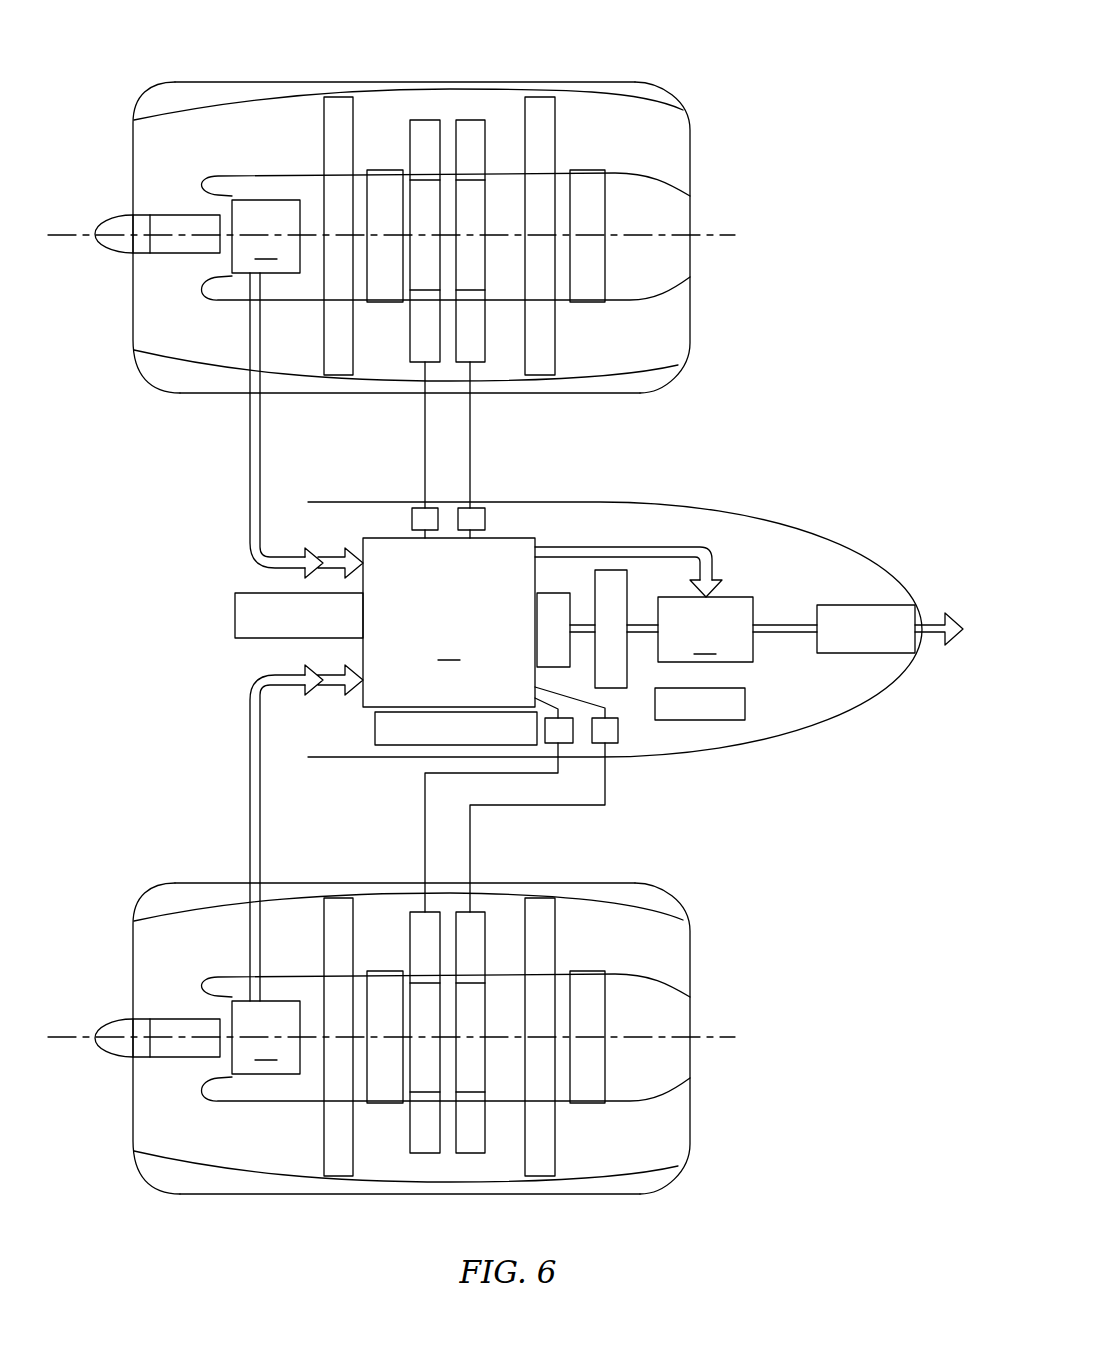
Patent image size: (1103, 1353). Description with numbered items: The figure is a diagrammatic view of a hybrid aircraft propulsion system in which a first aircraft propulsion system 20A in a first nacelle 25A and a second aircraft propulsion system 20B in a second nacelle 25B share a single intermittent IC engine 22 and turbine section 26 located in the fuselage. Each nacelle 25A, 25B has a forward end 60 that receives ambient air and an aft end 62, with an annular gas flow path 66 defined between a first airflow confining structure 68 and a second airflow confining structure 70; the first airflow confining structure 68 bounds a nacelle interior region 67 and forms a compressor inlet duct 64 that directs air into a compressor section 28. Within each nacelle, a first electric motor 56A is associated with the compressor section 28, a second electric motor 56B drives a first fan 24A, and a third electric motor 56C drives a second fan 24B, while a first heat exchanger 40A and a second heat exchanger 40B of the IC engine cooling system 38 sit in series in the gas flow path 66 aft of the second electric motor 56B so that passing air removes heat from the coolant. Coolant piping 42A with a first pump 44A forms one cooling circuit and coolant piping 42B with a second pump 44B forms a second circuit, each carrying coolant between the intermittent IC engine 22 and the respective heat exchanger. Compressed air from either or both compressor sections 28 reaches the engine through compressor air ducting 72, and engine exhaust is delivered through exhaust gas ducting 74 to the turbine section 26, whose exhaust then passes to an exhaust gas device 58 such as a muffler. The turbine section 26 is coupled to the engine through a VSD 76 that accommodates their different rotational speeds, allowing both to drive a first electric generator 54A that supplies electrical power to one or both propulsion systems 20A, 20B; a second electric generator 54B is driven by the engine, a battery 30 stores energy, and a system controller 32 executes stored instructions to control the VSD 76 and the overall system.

The first aircraft propulsion system 20A is at (727, 63).
The second aircraft propulsion system 20B is at (727, 864).
The intermittent IC engine 22 is at (449, 622).
The first fan 24A is at (340, 97).
The second fan 24B is at (543, 97).
The first nacelle 25A is at (678, 365).
The second nacelle 25B is at (678, 1166).
The turbine section 26 is at (705, 629).
The compressor section 28 is at (266, 637).
The battery 30 is at (746, 705).
The system controller 32 is at (374, 722).
The IC engine cooling system 38 is at (368, 437).
The first heat exchanger 40A is at (425, 120).
The second heat exchanger 40B is at (470, 120).
The coolant piping 42A is at (423, 425).
The coolant piping 42B is at (472, 425).
The first pump 44A is at (412, 507).
The second pump 44B is at (485, 507).
The first electric generator 54A is at (622, 690).
The second electric generator 54B is at (235, 616).
The first electric motor 56A is at (173, 256).
The second electric motor 56B is at (393, 170).
The third electric motor 56C is at (594, 170).
The exhaust gas device 58 is at (848, 605).
The forward end 60 is at (132, 152).
The aft end 62 is at (690, 302).
The compressor inlet duct 64 is at (220, 205).
The gas flow path 66 is at (285, 132).
The nacelle interior region 67 is at (294, 195).
The first airflow confining structure 68 is at (240, 177).
The second airflow confining structure 70 is at (190, 112).
The compressor air ducting 72 is at (247, 452).
The exhaust gas ducting 74 is at (592, 546).
The VSD 76 is at (555, 592).